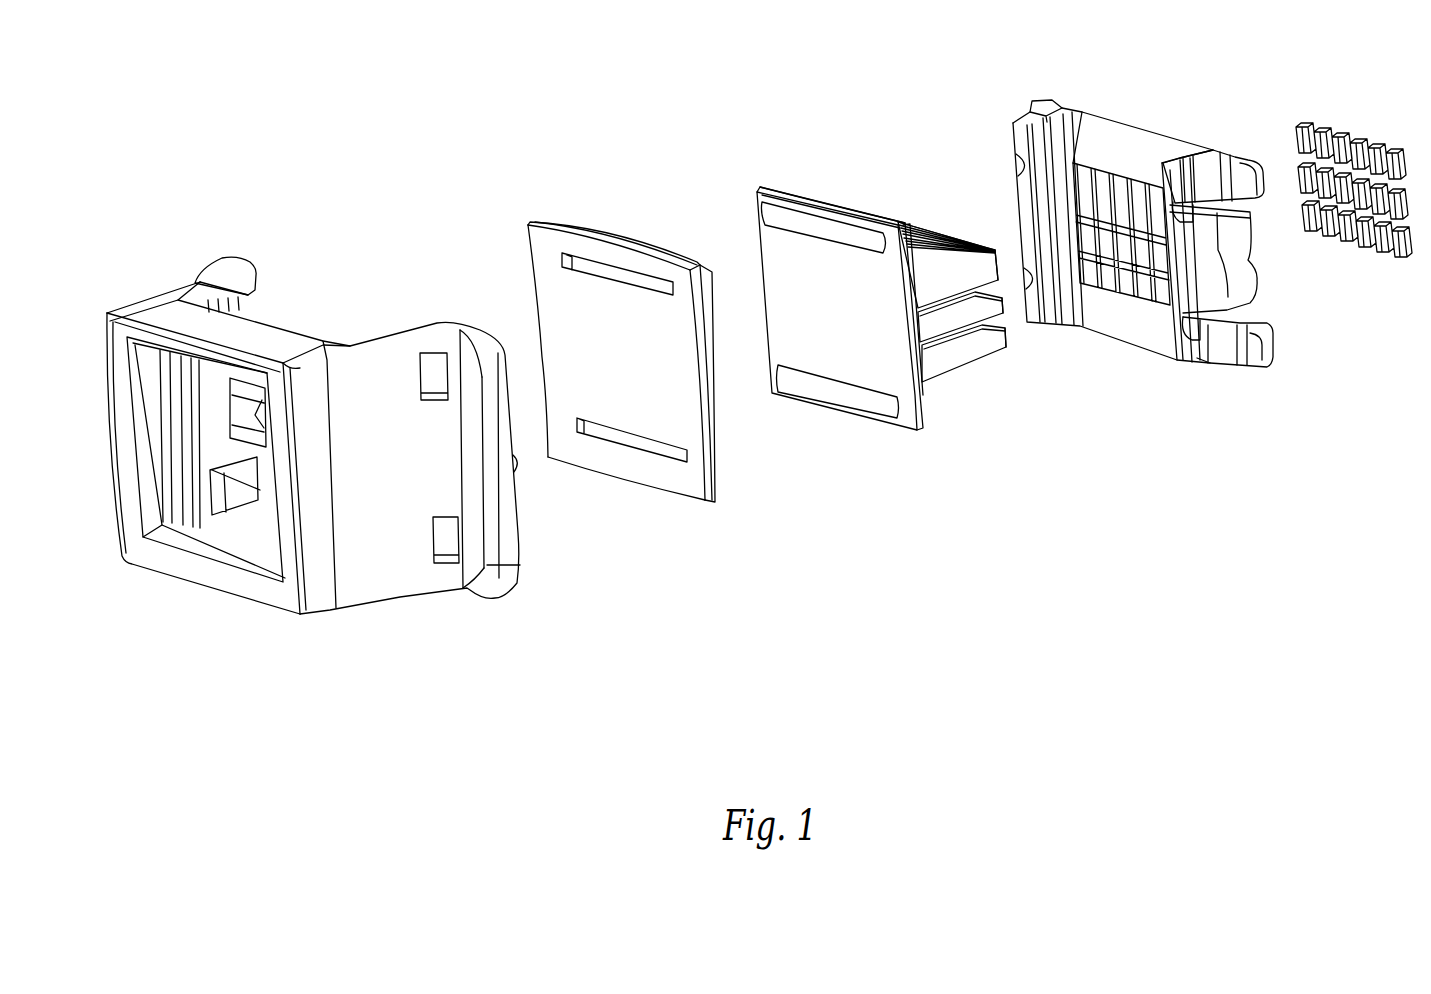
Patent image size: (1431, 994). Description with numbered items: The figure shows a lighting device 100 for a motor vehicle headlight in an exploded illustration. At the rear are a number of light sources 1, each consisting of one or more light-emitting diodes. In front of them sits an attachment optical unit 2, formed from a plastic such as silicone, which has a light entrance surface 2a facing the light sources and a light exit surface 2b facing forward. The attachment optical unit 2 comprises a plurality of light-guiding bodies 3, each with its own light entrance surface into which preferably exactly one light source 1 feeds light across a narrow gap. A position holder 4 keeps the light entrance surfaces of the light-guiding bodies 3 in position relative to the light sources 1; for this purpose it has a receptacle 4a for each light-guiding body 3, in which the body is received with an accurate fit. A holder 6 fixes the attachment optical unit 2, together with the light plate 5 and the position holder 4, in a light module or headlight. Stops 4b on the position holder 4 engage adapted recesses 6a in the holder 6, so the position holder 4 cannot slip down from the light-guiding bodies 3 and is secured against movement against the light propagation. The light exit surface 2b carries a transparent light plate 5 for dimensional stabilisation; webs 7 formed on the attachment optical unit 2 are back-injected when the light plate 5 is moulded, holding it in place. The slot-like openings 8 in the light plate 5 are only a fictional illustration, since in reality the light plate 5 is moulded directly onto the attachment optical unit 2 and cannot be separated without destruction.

The lighting device 100 is at (643, 127).
The light sources 1 is at (1298, 135).
The attachment optical unit 2 is at (915, 212).
The light entrance surface 2a is at (1022, 338).
The light exit surface 2b is at (866, 364).
The light-guiding bodies 3 is at (935, 268).
The position holder 4 is at (1135, 158).
The receptacle 4a is at (1080, 187).
The stops 4b is at (1243, 180).
The light plate 5 is at (698, 480).
The holder 6 is at (368, 528).
The recesses 6a is at (433, 366).
The webs 7 is at (800, 223).
The slot-like openings 8 is at (580, 263).